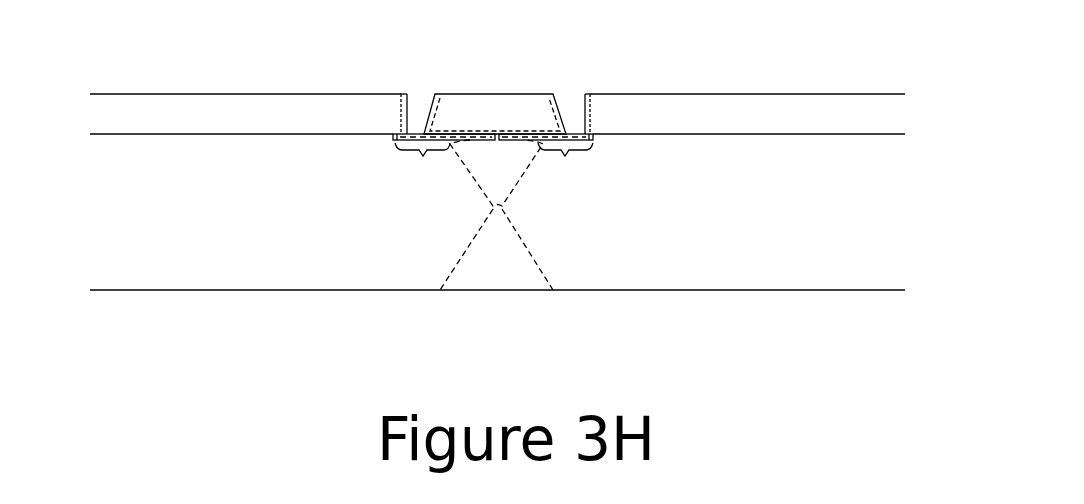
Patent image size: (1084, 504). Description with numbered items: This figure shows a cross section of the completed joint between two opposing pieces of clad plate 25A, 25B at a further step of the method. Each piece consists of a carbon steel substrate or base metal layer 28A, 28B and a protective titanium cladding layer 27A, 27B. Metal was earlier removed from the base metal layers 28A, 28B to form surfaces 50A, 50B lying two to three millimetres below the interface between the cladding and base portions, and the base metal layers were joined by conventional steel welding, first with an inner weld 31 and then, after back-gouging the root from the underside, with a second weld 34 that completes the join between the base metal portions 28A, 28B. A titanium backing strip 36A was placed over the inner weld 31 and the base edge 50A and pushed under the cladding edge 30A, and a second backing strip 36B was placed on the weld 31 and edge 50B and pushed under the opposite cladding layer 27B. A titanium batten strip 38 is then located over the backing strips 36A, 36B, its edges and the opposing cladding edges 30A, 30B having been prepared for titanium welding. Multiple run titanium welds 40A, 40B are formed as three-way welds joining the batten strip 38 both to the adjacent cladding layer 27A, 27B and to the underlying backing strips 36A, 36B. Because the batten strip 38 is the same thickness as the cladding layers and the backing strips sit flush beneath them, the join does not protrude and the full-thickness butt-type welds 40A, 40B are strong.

The clad plate piece 25A is at (260, 308).
The clad plate piece 25B is at (667, 308).
The cladding layer 27A is at (342, 126).
The cladding layer 27B is at (697, 126).
The base metal layer 28A is at (338, 225).
The base metal layer 28B is at (697, 225).
The cladding edge 30A is at (403, 115).
The cladding edge 30B is at (589, 113).
The inner weld 31 is at (510, 175).
The second weld 34 is at (510, 278).
The backing strip 36A is at (393, 145).
The backing strip 36B is at (595, 140).
The batten strip 38 is at (508, 124).
The titanium weld 40A is at (422, 101).
The titanium weld 40B is at (569, 98).
The surface 50A is at (423, 166).
The surface 50B is at (565, 166).